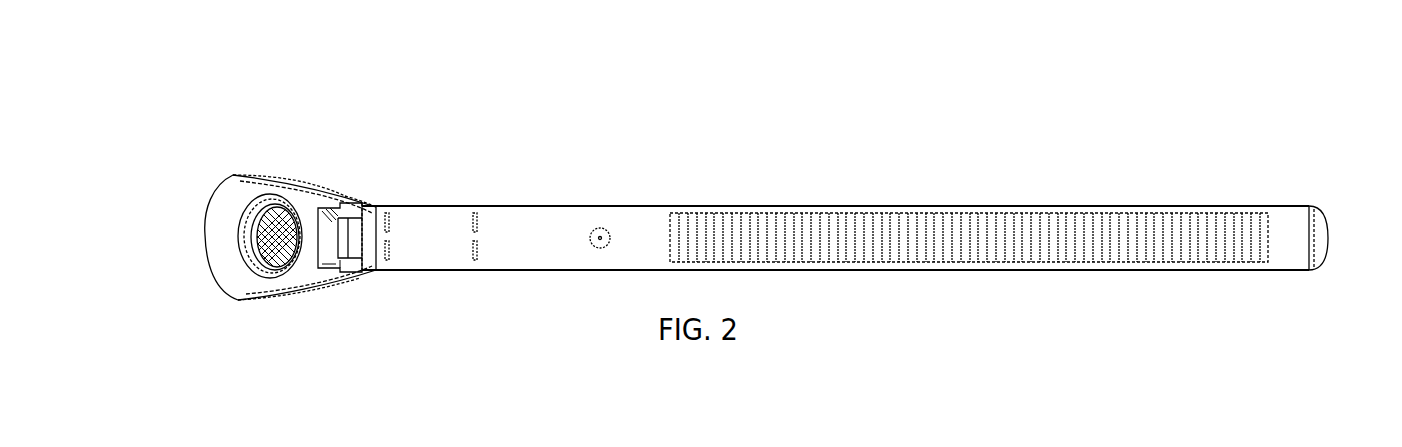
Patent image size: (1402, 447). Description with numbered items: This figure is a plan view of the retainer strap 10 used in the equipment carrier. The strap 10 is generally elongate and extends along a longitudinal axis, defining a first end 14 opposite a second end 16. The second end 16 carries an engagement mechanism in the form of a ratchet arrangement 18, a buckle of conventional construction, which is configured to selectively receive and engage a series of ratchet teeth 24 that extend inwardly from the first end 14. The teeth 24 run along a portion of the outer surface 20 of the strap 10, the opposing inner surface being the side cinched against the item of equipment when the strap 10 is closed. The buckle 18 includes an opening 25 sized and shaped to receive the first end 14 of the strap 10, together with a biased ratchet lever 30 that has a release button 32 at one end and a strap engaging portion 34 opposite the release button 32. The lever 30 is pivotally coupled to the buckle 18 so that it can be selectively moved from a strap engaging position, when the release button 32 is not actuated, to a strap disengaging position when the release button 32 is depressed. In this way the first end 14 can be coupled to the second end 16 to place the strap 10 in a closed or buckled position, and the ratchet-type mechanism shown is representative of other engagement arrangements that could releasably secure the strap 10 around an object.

The strap 10 is at (940, 113).
The first end 14 is at (1275, 207).
The second end 16 is at (345, 168).
The ratchet arrangement 18 is at (262, 304).
The outer surface 20 is at (552, 246).
The ratchet teeth 24 is at (862, 252).
The opening 25 is at (358, 230).
The ratchet lever 30 is at (318, 208).
The release button 32 is at (250, 220).
The strap engaging portion 34 is at (362, 256).